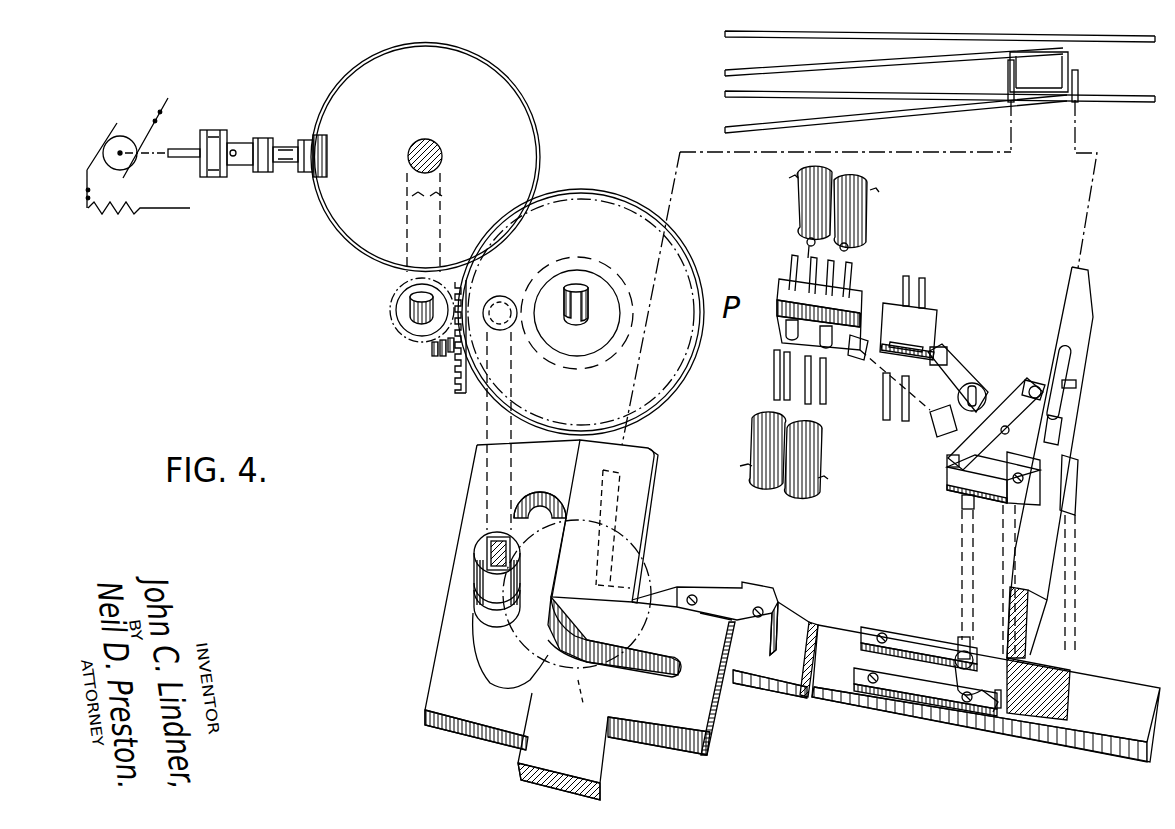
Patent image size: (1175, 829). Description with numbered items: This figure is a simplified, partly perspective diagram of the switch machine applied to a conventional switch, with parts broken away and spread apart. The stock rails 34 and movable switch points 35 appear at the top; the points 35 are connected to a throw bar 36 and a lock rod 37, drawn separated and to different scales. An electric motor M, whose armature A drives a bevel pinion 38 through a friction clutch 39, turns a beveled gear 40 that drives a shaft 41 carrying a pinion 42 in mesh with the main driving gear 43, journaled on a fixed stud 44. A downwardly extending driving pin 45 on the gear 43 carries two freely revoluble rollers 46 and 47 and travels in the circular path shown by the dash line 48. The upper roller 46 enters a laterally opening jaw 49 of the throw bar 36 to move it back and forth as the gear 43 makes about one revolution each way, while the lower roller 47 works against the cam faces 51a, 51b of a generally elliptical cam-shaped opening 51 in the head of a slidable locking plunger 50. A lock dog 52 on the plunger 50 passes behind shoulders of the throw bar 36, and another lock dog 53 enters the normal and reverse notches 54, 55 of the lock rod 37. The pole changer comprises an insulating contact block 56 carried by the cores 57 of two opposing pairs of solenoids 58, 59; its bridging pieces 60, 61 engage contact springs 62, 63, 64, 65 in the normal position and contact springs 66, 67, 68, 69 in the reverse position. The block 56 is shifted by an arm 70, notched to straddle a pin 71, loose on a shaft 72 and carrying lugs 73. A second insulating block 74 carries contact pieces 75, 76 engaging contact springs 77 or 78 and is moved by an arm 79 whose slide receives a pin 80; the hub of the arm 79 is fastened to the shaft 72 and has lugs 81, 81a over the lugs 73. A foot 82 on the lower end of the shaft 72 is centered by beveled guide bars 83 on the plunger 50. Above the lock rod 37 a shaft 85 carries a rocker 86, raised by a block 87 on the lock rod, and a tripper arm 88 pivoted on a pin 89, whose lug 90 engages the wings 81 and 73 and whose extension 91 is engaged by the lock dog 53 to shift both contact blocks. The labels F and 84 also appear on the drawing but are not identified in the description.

The electric motor M is at (138, 152).
The armature A is at (124, 165).
The field resistance F is at (138, 214).
The stock rails 34 is at (1152, 55).
The switch points 35 is at (954, 104).
The throw bar 36 is at (1013, 118).
The lock rod 37 is at (1075, 117).
The bevel pinion 38 is at (310, 177).
The friction clutch 39 is at (246, 168).
The beveled gear 40 is at (353, 237).
The shaft 41 is at (410, 307).
The pinion 42 is at (430, 348).
The main driving gear 43 is at (607, 212).
The fixed stud 44 is at (590, 300).
The driving pin 45 is at (493, 348).
The upper roller 46 is at (480, 585).
The roller 47 is at (482, 610).
The dash line 48 is at (654, 568).
The jaw 49 is at (640, 680).
The locking plunger 50 is at (838, 680).
The cam-shaped opening 51 is at (518, 553).
The cam face 51a is at (478, 649).
The cam face 51b is at (541, 652).
The lock dog 52 is at (763, 592).
The lock dog 53 is at (1070, 668).
The normal notch 54 is at (1060, 530).
The reverse notch 55 is at (1052, 597).
The contact block 56 is at (777, 305).
The cores 57 is at (830, 348).
The solenoids 58 is at (795, 490).
The solenoids 59 is at (855, 177).
The contact or bridging piece 60 is at (790, 282).
The contact or bridging piece 61 is at (858, 298).
The contact spring 62 is at (806, 258).
The contact spring 63 is at (837, 250).
The contact spring 64 is at (855, 258).
The contact spring 65 is at (856, 278).
The contact spring 66 is at (774, 372).
The contact spring 67 is at (783, 395).
The contact spring 68 is at (811, 400).
The contact spring 69 is at (826, 385).
The arm 70 is at (935, 420).
The pin 71 is at (862, 340).
The shaft 72 is at (965, 499).
The lug 73 is at (950, 465).
The contact block 74 is at (937, 315).
The contact piece 75 is at (905, 305).
The contact piece 76 is at (930, 336).
The contact springs 77 is at (930, 280).
The contact springs 78 is at (888, 420).
The arm 79 is at (960, 390).
The pin 80 is at (950, 357).
The lug 81 is at (947, 455).
The lug 81a is at (1030, 392).
The foot or arm 82 is at (980, 684).
The guide bars 83 is at (908, 692).
The pin 84 is at (997, 708).
The shaft 85 is at (1076, 388).
The rocker 86 is at (1057, 352).
The block 87 is at (1062, 425).
The tripper arm 88 is at (995, 432).
The pin 89 is at (1020, 423).
The lug 90 is at (953, 478).
The extension 91 is at (990, 498).